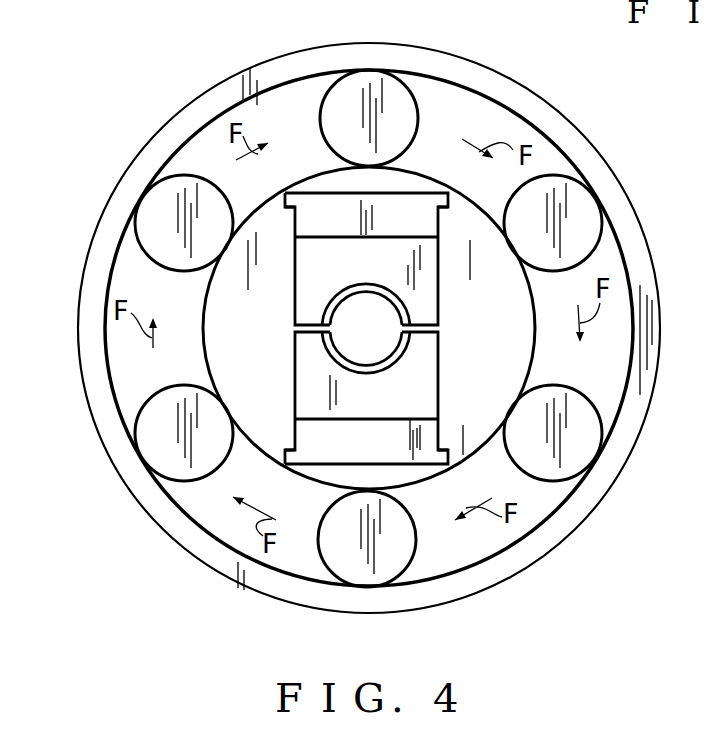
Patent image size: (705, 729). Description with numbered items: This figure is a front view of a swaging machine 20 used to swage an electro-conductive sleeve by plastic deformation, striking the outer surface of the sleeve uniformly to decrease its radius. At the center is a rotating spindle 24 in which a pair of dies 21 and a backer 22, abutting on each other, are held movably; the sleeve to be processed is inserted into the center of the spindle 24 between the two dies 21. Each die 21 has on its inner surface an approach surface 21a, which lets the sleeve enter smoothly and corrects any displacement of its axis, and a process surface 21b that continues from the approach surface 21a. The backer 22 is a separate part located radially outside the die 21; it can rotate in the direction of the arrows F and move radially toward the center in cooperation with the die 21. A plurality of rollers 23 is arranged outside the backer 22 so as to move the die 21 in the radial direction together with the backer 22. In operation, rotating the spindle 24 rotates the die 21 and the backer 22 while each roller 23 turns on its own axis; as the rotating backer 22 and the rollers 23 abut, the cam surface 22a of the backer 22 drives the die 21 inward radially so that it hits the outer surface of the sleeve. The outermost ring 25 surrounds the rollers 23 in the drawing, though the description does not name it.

The swaging machine 20 is at (548, 86).
The die 21 is at (327, 258).
The approach surface 21a is at (322, 342).
The process surface 21b is at (364, 362).
The backer 22 is at (400, 215).
The cam surface 22a is at (318, 185).
The roller 23 is at (367, 80).
The spindle 24 is at (265, 430).
The outer ring 25 is at (90, 330).